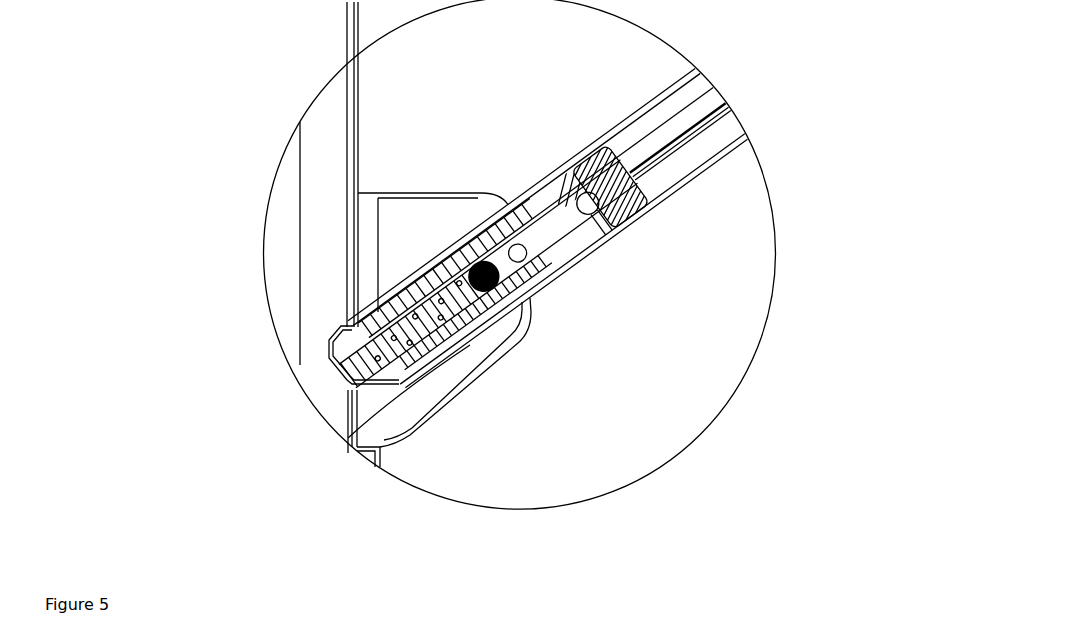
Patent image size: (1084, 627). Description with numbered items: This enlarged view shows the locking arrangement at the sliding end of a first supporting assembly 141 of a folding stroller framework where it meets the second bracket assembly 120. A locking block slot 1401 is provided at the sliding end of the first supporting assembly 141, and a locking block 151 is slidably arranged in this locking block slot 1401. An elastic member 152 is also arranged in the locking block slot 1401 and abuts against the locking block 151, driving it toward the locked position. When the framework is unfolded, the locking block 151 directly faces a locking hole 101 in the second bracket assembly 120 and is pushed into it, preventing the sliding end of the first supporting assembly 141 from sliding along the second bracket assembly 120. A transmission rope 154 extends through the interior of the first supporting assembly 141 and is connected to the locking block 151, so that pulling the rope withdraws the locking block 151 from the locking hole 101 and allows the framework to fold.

The second bracket assembly 120 is at (350, 118).
The elastic member 152 is at (412, 272).
The locking block 151 is at (334, 326).
The locking hole 101 is at (348, 388).
The locking block slot 1401 is at (375, 448).
The first supporting assembly 141 is at (651, 98).
The transmission rope 154 is at (656, 156).